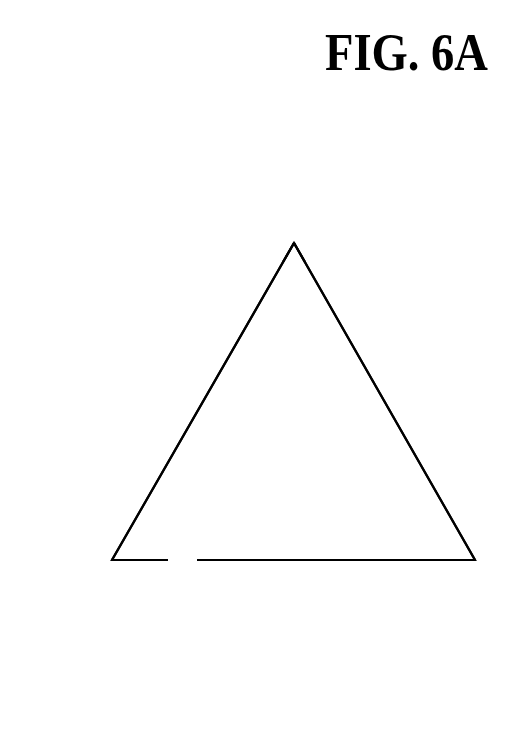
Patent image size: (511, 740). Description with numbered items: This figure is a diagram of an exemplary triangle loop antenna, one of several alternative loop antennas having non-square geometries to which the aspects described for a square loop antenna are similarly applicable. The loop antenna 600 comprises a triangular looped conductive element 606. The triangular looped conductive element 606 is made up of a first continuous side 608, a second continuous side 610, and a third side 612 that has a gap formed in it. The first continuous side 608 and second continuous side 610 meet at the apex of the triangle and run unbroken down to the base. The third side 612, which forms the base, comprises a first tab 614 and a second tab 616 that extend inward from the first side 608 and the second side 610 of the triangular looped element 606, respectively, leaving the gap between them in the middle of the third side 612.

The loop antenna 600 is at (174, 194).
The triangular looped conductive element 606 is at (287, 255).
The first continuous side 608 is at (220, 368).
The second continuous side 610 is at (370, 371).
The third side 612 is at (178, 592).
The first tab 614 is at (150, 562).
The second tab 616 is at (223, 561).